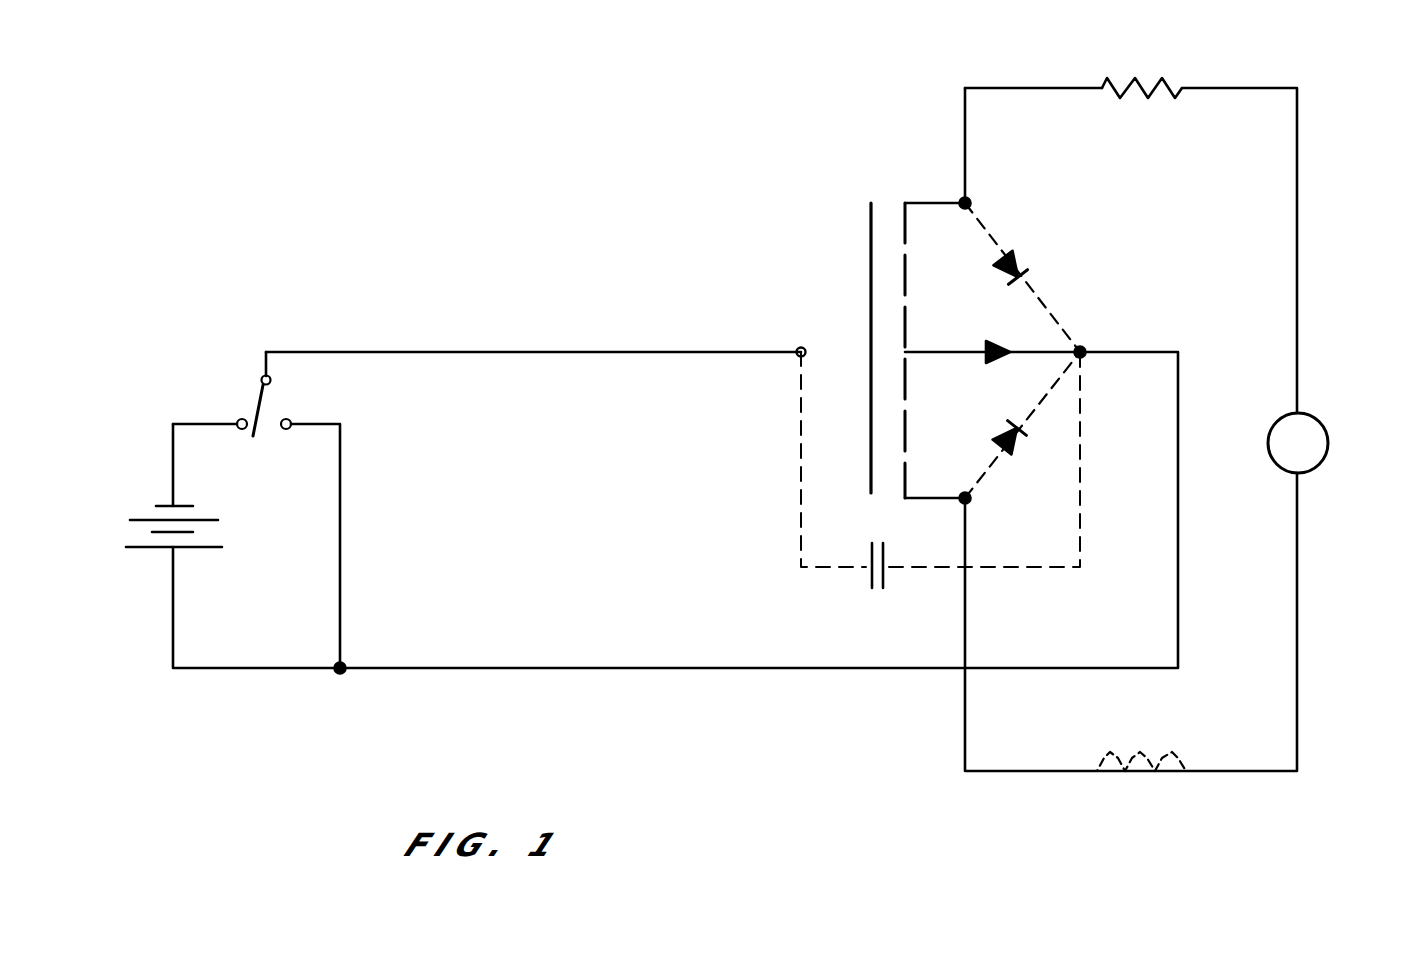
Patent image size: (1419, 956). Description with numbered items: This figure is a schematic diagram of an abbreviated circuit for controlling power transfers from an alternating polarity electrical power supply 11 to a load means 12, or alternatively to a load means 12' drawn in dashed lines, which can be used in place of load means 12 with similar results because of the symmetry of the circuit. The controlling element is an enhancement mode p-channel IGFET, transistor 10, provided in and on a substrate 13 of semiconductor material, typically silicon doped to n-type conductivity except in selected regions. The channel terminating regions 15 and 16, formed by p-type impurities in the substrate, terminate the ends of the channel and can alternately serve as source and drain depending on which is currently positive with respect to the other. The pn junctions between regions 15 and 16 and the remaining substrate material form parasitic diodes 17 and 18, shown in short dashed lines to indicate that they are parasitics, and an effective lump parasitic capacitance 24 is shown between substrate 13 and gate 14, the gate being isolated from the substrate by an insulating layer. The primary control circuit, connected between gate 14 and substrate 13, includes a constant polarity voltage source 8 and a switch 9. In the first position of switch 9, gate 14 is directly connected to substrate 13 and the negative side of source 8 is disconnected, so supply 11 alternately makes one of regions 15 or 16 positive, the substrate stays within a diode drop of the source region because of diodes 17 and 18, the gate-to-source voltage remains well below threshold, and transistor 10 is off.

The constant polarity voltage source 8 is at (214, 539).
The switch 9 is at (275, 402).
The field-effect transistor 10 is at (966, 305).
The alternating polarity electrical power supply 11 is at (1323, 425).
The load means 12 is at (1156, 64).
The alternative load means 12' is at (1138, 780).
The substrate 13 is at (1086, 345).
The gate 14 is at (870, 240).
The channel terminating region 15 is at (971, 200).
The channel terminating region 16 is at (971, 503).
The parasitic diode 17 is at (1025, 262).
The parasitic diode 18 is at (1016, 445).
The lump parasitic capacitance 24 is at (873, 597).